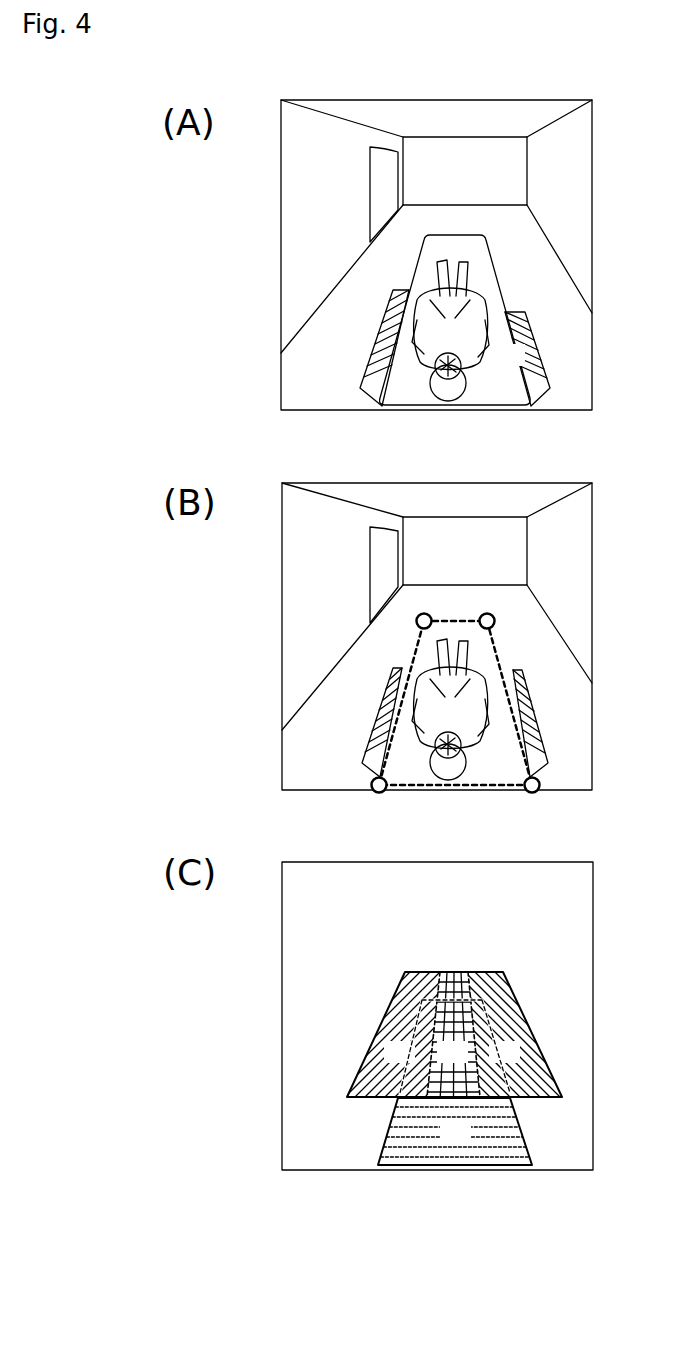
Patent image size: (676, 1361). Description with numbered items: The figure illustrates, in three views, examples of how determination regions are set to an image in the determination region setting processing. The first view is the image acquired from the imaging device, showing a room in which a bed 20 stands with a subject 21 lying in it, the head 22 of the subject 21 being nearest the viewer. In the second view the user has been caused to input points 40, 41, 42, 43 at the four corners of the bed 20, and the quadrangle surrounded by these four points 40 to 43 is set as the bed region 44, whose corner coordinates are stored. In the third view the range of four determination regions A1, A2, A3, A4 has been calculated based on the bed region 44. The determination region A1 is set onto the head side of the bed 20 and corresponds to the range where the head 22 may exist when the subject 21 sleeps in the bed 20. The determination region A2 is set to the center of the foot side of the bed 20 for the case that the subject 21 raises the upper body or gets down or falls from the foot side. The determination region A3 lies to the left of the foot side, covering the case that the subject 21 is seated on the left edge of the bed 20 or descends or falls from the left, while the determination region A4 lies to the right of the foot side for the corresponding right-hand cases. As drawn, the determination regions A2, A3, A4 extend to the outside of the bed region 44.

In FIG. 4A, the bed 20 is at (408, 290).
In FIG. 4A, the subject 21 is at (458, 326).
In FIG. 4A, the head 22 is at (486, 356).
In FIG. 4B, the point 40 is at (408, 610).
In FIG. 4B, the point 41 is at (502, 610).
In FIG. 4B, the point 42 is at (362, 782).
In FIG. 4B, the point 43 is at (550, 786).
In FIG. 4B, the bed region 44 is at (467, 711).
In FIG. 4C, the bed region 44 is at (515, 998).
In FIG. 4C, the determination region A1 is at (455, 1131).
In FIG. 4C, the determination region A2 is at (453, 1034).
In FIG. 4C, the determination region A3 is at (397, 1034).
In FIG. 4C, the determination region A4 is at (515, 1034).